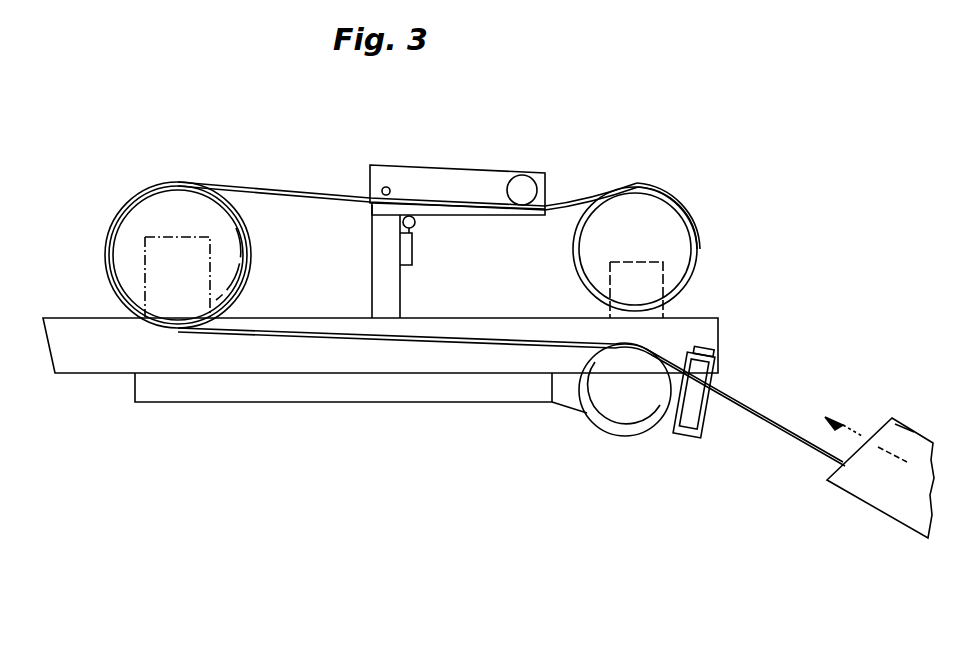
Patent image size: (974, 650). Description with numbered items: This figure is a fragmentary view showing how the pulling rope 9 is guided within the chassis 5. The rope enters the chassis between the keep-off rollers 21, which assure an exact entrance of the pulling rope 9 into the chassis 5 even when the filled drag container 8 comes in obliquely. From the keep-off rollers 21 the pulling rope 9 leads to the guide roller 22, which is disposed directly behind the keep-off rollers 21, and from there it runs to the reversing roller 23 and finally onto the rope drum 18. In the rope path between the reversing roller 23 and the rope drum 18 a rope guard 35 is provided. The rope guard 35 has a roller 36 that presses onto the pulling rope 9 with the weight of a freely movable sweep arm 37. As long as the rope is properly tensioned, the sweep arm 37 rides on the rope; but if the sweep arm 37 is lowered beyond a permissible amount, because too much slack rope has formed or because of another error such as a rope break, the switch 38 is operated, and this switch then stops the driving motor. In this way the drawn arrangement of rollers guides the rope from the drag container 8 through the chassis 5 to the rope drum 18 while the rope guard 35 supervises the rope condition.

The chassis 5 is at (82, 360).
The drag container 8 is at (888, 500).
The pulling rope 9 is at (288, 193).
The rope drum 18 is at (663, 225).
The keep-off rollers 21 is at (705, 372).
The guide roller 22 is at (610, 410).
The reversing roller 23 is at (128, 230).
The rope guard 35 is at (372, 178).
The roller 36 is at (532, 183).
The sweep arm 37 is at (450, 185).
The switch 38 is at (412, 250).